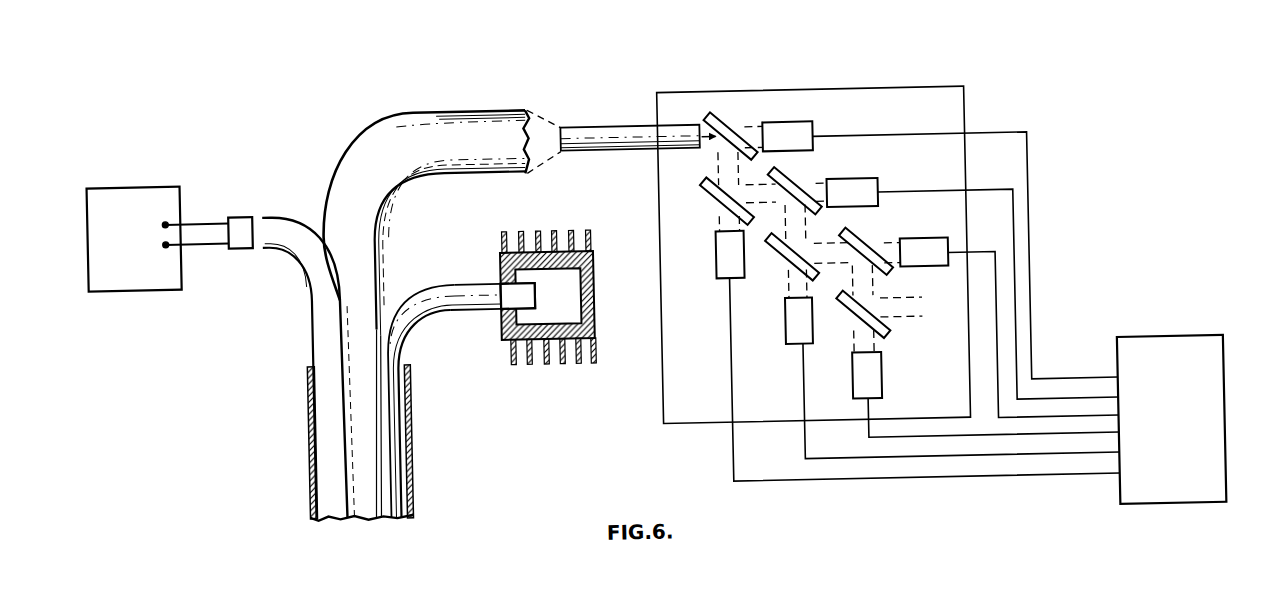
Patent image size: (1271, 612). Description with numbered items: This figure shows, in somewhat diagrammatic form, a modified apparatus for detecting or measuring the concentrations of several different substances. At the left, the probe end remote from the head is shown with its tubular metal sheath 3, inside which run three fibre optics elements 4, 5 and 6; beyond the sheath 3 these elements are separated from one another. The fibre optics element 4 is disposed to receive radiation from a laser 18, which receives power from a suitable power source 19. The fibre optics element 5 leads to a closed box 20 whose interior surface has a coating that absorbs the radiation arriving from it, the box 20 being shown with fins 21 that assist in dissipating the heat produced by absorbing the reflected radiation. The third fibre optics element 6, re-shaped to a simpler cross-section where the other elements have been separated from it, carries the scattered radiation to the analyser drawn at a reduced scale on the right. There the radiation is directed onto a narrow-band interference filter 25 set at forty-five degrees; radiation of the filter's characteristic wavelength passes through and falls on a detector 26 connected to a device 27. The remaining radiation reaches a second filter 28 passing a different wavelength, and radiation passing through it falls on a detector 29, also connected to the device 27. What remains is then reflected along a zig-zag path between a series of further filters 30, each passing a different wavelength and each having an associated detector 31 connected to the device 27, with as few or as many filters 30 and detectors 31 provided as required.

The tubular metal sheath 3 is at (405, 410).
The fibre optics element 4 is at (334, 421).
The fibre optics element 5 is at (477, 292).
The fibre optics element 6 is at (460, 131).
The laser 18 is at (241, 218).
The power source 19 is at (110, 196).
The closed box 20 is at (554, 326).
The fins 21 is at (589, 361).
The interference filter 25 is at (721, 116).
The detector 26 is at (779, 131).
The device 27 is at (1144, 379).
The second filter 28 is at (707, 191).
The detector 29 is at (729, 260).
The further filters 30 is at (803, 171).
The detectors 31 is at (852, 192).